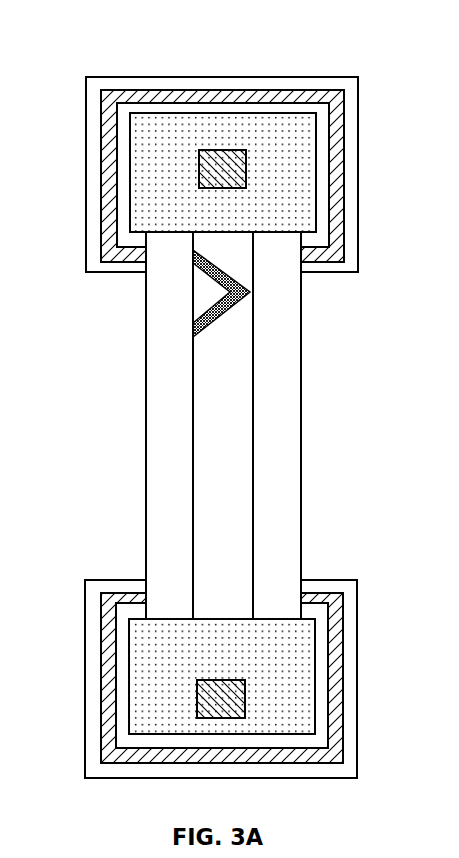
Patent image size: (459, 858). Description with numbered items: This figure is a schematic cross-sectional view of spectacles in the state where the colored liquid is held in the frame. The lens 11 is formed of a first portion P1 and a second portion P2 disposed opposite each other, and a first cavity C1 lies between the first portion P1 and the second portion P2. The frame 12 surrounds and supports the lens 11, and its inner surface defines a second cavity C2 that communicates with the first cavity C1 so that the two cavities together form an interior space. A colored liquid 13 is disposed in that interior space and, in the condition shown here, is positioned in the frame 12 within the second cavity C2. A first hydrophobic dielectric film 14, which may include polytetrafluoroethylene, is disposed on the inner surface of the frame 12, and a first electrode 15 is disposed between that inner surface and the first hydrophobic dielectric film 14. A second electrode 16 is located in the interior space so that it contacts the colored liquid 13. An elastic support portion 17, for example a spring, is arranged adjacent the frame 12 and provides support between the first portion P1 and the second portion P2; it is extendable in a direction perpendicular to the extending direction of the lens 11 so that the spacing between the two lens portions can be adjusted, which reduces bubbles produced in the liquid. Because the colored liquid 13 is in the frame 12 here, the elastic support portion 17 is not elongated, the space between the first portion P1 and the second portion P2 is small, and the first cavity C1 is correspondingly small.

The lens 11 is at (302, 317).
The frame 12 is at (352, 217).
The colored liquid 13 is at (148, 173).
The first hydrophobic dielectric film 14 is at (320, 147).
The first electrode 15 is at (333, 182).
The second electrode 16 is at (217, 167).
The elastic support portion 17 is at (193, 320).
The first portion P1 is at (160, 386).
The second portion P2 is at (287, 388).
The first cavity C1 is at (213, 515).
The second cavity C2 is at (283, 113).